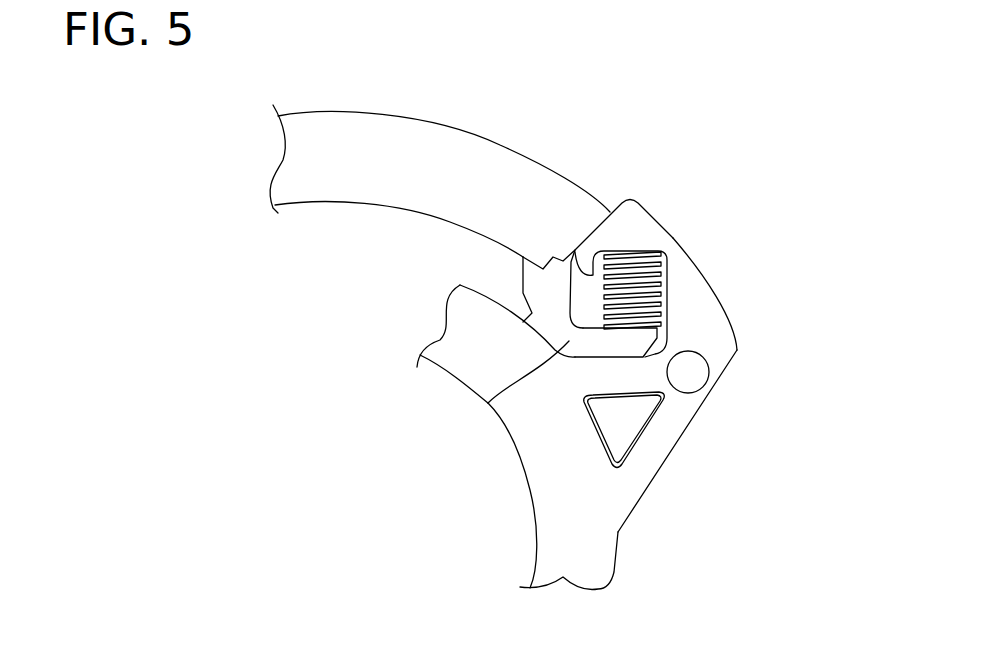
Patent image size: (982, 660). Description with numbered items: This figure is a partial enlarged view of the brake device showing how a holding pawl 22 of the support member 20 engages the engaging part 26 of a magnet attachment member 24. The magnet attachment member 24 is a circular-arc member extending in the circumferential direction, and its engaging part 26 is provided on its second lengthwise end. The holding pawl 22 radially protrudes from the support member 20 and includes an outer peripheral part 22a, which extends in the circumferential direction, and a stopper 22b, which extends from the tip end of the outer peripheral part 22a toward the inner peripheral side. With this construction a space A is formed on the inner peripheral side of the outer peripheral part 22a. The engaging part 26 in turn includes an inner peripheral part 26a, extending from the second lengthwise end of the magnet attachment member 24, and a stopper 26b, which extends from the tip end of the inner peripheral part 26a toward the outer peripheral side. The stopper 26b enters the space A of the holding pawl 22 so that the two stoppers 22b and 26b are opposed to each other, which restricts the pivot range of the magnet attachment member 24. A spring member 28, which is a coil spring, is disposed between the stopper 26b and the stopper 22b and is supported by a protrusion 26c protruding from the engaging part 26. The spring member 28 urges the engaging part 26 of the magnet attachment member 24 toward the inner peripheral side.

The support member 20 is at (620, 558).
The holding pawl 22 is at (676, 440).
The outer peripheral part 22a is at (705, 273).
The stopper 22b is at (637, 228).
The magnet attachment member 24 is at (336, 203).
The engaging part 26 is at (488, 403).
The inner peripheral part 26a is at (532, 313).
The stopper 26b is at (617, 347).
The protrusion 26c is at (660, 303).
The spring member 28 is at (663, 257).
The space A is at (585, 297).